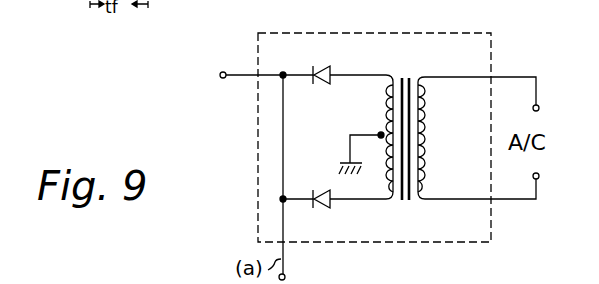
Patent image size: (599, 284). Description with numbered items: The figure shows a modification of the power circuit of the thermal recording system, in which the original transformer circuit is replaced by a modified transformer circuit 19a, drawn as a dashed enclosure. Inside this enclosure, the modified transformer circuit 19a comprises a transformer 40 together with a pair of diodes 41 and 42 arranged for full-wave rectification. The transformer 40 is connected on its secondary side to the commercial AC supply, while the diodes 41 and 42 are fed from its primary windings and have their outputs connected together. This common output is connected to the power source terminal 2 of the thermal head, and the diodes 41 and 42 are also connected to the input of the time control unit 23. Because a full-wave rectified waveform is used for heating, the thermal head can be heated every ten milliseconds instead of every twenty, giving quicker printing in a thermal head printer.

The power source terminal 2 is at (223, 72).
The modified transformer circuit 19a is at (458, 33).
The transformer 40 is at (411, 77).
The diode 41 is at (334, 70).
The diode 42 is at (320, 187).
The time control unit 23 is at (285, 278).